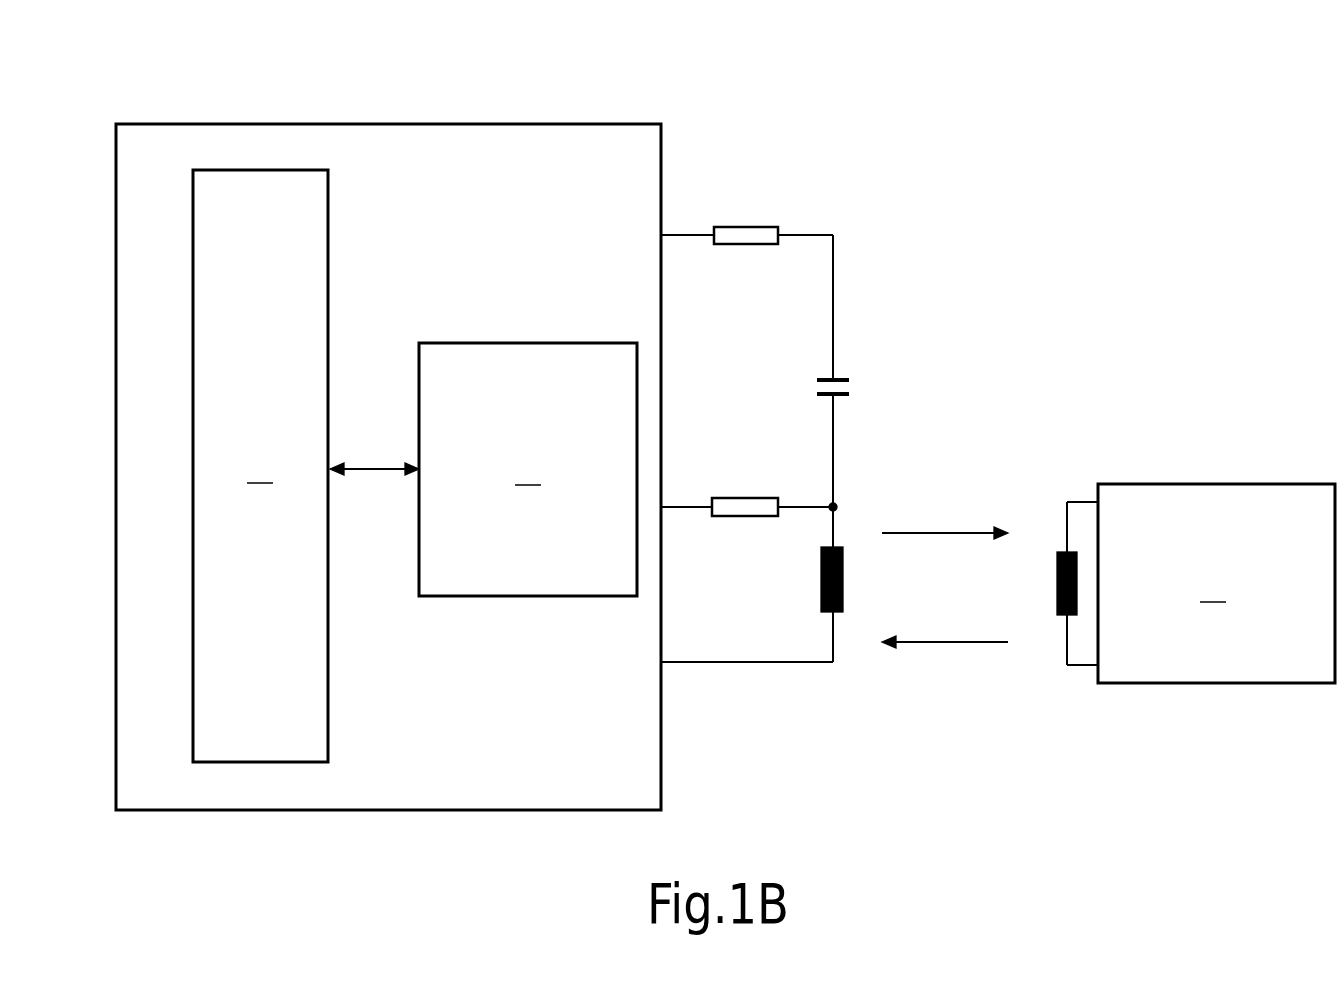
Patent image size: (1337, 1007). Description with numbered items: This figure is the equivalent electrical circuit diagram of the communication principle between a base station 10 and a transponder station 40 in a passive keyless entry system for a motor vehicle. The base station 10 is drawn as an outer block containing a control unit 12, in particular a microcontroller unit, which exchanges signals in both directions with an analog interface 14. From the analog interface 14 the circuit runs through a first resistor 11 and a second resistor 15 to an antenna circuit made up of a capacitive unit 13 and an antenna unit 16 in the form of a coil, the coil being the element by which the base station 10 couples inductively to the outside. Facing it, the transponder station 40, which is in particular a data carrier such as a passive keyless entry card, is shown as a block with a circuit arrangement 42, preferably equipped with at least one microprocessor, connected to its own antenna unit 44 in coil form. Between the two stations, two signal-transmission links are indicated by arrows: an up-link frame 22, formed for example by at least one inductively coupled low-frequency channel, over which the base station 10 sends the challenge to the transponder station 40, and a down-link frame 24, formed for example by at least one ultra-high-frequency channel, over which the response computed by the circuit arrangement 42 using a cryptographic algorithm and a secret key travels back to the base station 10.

The base station 10 is at (252, 124).
The first resistor 11 is at (747, 227).
The control unit 12 is at (260, 466).
The capacitive unit 13 is at (850, 385).
The analog interface 14 is at (528, 469).
The second resistor 15 is at (747, 498).
The antenna unit 16 is at (821, 582).
The up-link frame 22 is at (948, 531).
The down-link frame 24 is at (942, 644).
The transponder station 40 is at (1145, 537).
The circuit arrangement 42 is at (1216, 583).
The antenna unit 44 is at (1057, 585).